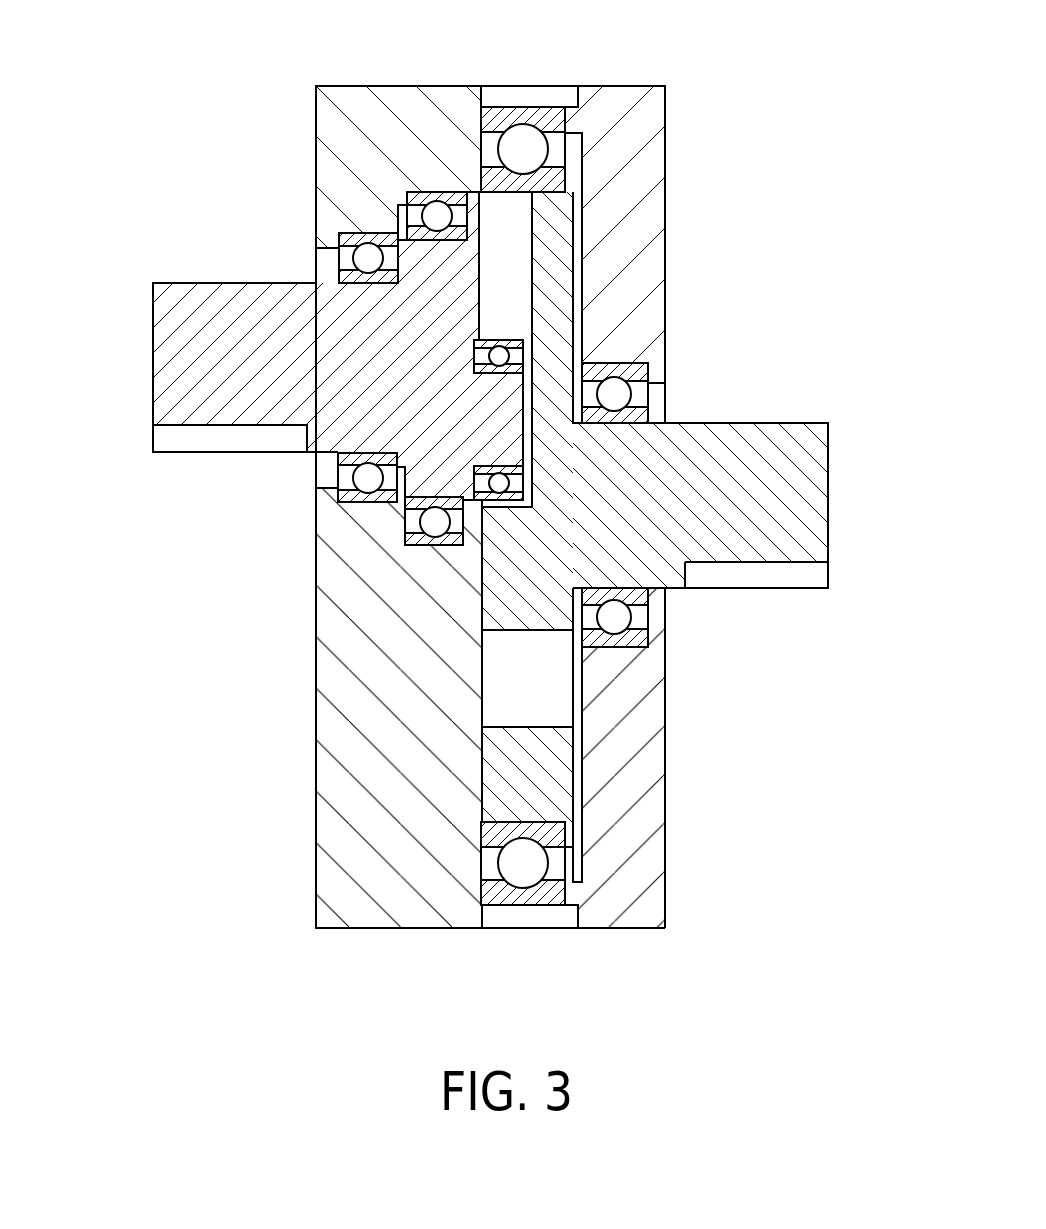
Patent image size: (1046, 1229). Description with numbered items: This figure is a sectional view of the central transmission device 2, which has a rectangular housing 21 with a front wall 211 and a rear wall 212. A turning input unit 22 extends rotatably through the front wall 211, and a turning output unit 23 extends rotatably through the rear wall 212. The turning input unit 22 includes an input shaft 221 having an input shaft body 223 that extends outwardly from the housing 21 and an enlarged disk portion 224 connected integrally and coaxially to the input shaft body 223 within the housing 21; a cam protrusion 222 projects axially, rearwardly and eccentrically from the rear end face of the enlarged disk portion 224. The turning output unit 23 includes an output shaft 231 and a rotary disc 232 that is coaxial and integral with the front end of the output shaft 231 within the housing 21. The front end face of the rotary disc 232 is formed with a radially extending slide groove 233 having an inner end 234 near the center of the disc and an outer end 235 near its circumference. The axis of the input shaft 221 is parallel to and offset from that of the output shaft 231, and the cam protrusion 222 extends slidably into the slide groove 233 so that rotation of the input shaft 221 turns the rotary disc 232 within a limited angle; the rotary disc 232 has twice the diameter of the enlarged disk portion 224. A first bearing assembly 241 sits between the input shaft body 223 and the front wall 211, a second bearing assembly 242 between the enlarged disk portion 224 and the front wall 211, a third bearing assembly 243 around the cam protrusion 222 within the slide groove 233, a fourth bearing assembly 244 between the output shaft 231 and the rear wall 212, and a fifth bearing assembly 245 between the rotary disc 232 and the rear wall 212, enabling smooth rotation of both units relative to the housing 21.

The central transmission device 2 is at (255, 115).
The housing 21 is at (668, 101).
The front wall 211 is at (355, 170).
The rear wall 212 is at (648, 212).
The turning input unit 22 is at (193, 455).
The input shaft 221 is at (152, 297).
The cam protrusion 222 is at (512, 392).
The input shaft body 223 is at (207, 373).
The enlarged disk portion 224 is at (422, 492).
The turning output unit 23 is at (812, 595).
The output shaft 231 is at (783, 505).
The rotary disc 232 is at (575, 778).
The slide groove 233 is at (505, 214).
The inner end 234 is at (657, 592).
The outer end 235 is at (520, 204).
The first bearing assembly 241 is at (345, 462).
The second bearing assembly 242 is at (422, 550).
The third bearing assembly 243 is at (505, 340).
The fourth bearing assembly 244 is at (643, 412).
The fifth bearing assembly 245 is at (517, 905).